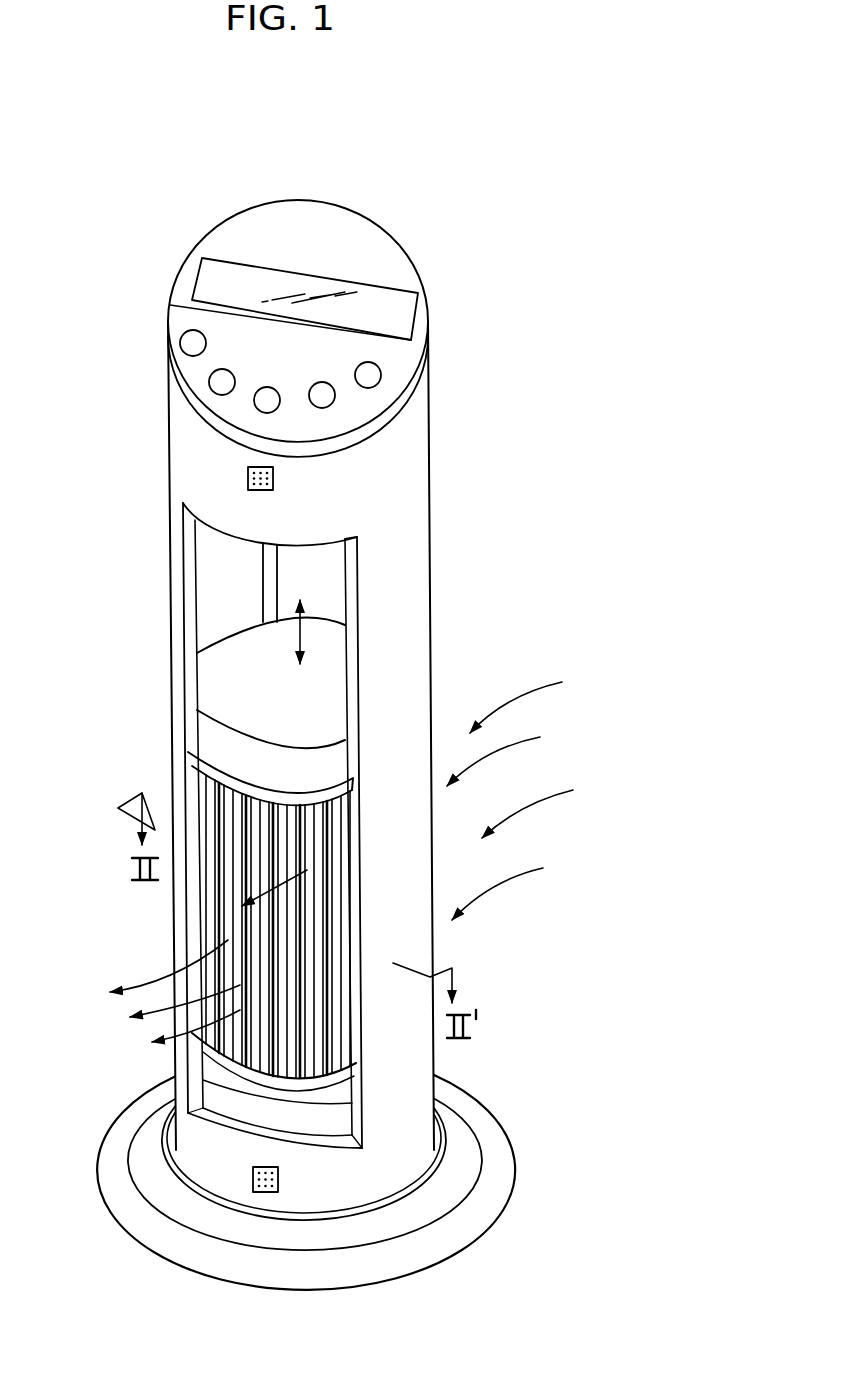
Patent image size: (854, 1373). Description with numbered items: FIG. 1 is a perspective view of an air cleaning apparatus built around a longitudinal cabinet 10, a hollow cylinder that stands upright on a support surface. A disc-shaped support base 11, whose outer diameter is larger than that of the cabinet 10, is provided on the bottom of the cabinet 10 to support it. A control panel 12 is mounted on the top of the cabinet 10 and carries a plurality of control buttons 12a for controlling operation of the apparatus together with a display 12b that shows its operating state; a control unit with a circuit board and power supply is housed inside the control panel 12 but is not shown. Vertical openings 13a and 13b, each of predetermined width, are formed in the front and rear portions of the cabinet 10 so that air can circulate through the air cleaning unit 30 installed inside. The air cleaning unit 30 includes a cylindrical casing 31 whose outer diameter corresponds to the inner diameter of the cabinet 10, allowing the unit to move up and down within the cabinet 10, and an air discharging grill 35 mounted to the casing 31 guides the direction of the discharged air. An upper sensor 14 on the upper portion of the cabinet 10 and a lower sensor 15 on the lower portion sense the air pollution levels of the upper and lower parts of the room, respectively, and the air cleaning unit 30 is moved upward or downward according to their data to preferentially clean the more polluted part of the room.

The cabinet 10 is at (446, 523).
The support base 11 is at (497, 1162).
The control panel 12 is at (406, 251).
The control buttons 12a is at (190, 342).
The display 12b is at (212, 282).
The vertical opening 13a is at (186, 527).
The vertical opening 13b is at (268, 582).
The upper sensor 14 is at (248, 473).
The lower sensor 15 is at (253, 1172).
The air cleaning unit 30 is at (213, 742).
The casing 31 is at (225, 697).
The air discharging grill 35 is at (206, 927).